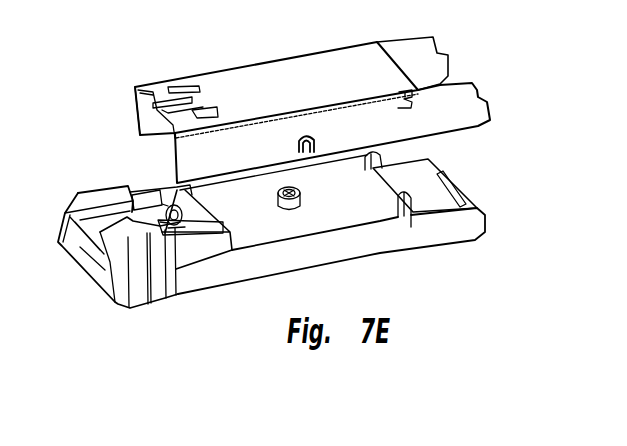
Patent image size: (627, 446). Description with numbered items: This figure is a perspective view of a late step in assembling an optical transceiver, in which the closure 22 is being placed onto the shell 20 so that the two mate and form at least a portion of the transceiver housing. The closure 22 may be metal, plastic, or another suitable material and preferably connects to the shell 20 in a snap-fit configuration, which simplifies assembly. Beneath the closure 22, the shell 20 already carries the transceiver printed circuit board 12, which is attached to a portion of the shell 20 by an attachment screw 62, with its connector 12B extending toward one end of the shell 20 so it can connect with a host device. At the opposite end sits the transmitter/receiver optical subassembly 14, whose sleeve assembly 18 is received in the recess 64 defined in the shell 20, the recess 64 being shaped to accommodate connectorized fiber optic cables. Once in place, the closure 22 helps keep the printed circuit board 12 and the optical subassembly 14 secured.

The closure 22 is at (262, 72).
The transceiver printed circuit board 12 is at (335, 217).
The connector 12B is at (437, 182).
The shell 20 is at (385, 238).
The attachment screw 62 is at (290, 210).
The sleeve assembly 18 is at (177, 184).
The transmitter/receiver optical subassembly 14 is at (155, 176).
The recess 64 is at (128, 191).